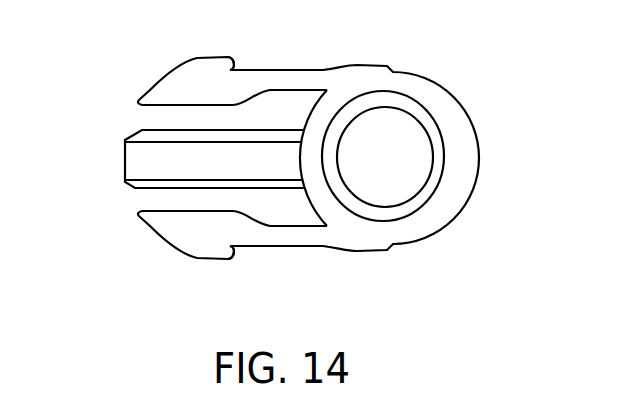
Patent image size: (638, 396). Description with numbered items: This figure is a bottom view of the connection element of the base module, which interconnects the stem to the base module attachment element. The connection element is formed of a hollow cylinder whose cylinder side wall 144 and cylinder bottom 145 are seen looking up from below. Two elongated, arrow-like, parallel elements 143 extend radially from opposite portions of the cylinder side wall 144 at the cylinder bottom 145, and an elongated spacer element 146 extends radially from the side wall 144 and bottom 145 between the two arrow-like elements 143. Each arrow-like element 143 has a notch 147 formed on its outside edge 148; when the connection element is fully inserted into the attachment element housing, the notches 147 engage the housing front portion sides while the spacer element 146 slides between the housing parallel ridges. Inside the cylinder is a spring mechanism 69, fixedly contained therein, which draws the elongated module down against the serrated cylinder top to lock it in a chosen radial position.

The spring mechanism 69 is at (402, 172).
The arrow-like elements 143 is at (162, 93).
The cylinder side wall 144 is at (447, 102).
The cylinder bottom 145 is at (453, 156).
The spacer element 146 is at (124, 163).
The notches 147 is at (242, 67).
The outside edges 148 is at (303, 67).